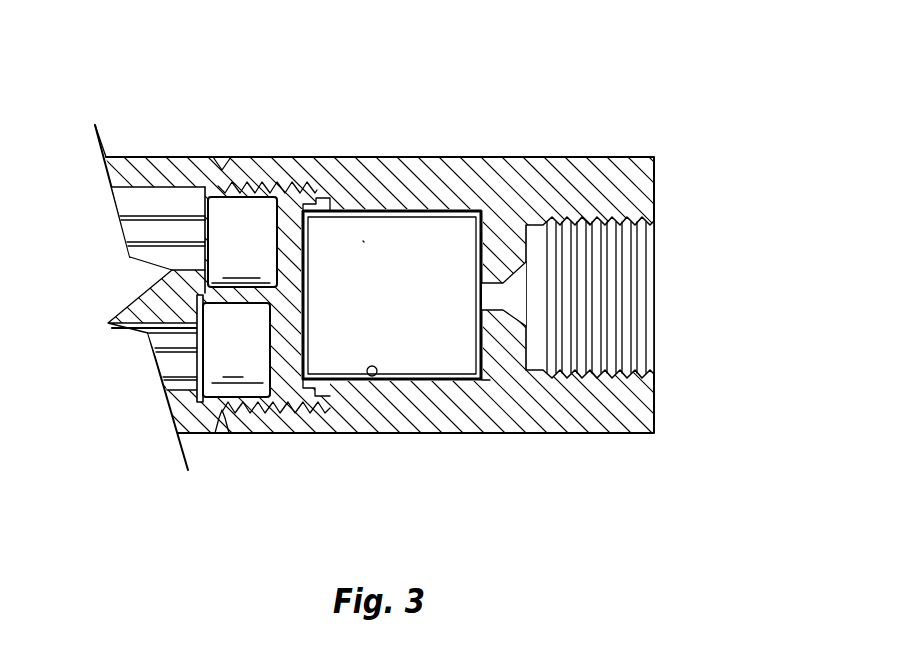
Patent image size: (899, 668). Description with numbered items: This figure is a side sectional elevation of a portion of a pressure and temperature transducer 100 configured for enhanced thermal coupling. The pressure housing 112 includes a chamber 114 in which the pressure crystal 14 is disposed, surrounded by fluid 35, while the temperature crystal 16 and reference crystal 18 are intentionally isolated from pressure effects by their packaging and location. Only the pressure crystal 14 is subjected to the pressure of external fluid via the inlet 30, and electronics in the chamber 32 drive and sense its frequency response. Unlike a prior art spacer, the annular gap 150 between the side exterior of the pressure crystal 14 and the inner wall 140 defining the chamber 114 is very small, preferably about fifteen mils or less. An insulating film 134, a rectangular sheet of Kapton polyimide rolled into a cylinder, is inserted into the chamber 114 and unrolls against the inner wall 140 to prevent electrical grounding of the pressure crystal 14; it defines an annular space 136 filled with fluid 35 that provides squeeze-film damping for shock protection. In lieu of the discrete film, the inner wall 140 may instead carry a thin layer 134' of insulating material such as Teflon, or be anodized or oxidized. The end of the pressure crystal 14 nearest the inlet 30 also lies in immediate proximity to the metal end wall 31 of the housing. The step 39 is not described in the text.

The pressure and temperature transducer 100 is at (644, 93).
The pressure housing 112 is at (425, 436).
The chamber 114 is at (416, 298).
The annular space 136 is at (475, 230).
The insulating film 134 is at (276, 455).
The layer of electrically insulating material 134' is at (411, 169).
The inner wall 140 is at (362, 385).
The annular gap 150 is at (482, 354).
The pressure crystal 14 is at (363, 241).
The temperature crystal 16 is at (218, 216).
The reference crystal 18 is at (218, 350).
The inlet 30 is at (527, 324).
The metal end wall 31 is at (482, 380).
The chamber 32 is at (150, 200).
The fluid 35 is at (325, 190).
The step 39 is at (315, 203).